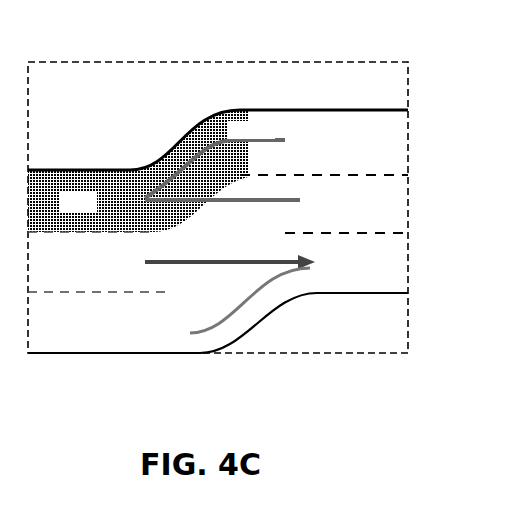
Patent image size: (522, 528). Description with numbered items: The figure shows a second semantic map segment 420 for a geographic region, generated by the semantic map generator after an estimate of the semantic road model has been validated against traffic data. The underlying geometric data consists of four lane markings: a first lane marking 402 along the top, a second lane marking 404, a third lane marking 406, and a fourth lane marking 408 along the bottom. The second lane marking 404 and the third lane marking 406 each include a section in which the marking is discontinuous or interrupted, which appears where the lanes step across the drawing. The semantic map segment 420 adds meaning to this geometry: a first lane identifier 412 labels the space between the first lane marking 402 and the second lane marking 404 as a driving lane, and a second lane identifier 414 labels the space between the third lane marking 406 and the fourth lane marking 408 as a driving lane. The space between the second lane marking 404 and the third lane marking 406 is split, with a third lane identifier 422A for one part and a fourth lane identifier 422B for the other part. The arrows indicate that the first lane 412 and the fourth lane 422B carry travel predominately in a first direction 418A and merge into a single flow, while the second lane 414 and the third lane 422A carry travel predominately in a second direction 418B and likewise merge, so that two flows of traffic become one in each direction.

The second semantic map segment 420 is at (338, 62).
The first lane marking 402 is at (290, 108).
The second lane marking 404 is at (308, 175).
The third lane marking 406 is at (288, 233).
The fourth lane marking 408 is at (343, 293).
The first lane identifier 412 is at (218, 171).
The second lane identifier 414 is at (77, 318).
The first direction 418A is at (213, 162).
The second direction 418B is at (208, 262).
The third lane identifier 422A is at (124, 223).
The fourth lane identifier 422B is at (367, 205).